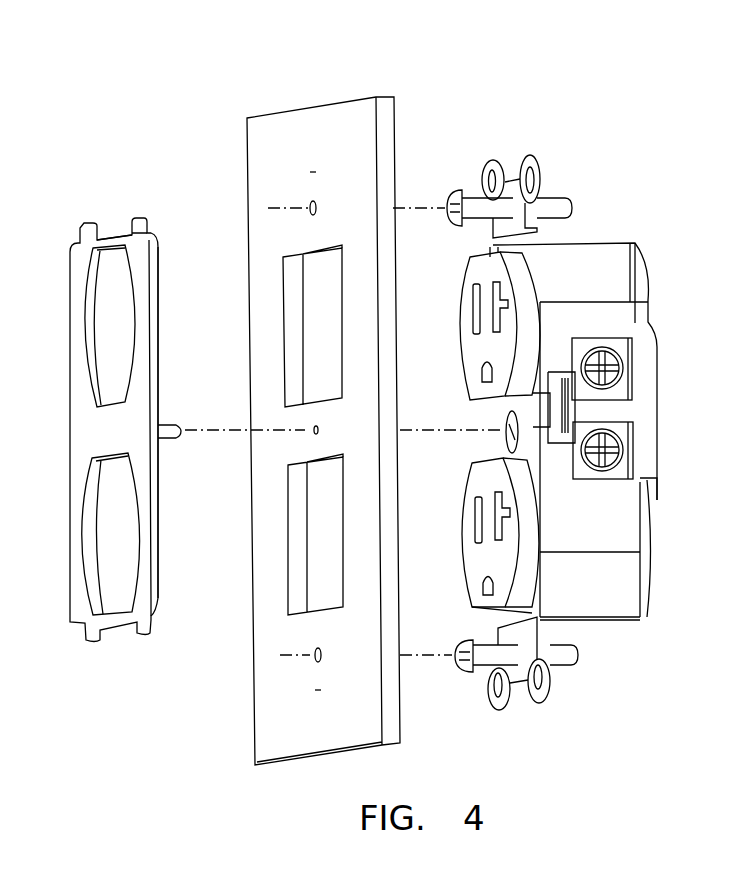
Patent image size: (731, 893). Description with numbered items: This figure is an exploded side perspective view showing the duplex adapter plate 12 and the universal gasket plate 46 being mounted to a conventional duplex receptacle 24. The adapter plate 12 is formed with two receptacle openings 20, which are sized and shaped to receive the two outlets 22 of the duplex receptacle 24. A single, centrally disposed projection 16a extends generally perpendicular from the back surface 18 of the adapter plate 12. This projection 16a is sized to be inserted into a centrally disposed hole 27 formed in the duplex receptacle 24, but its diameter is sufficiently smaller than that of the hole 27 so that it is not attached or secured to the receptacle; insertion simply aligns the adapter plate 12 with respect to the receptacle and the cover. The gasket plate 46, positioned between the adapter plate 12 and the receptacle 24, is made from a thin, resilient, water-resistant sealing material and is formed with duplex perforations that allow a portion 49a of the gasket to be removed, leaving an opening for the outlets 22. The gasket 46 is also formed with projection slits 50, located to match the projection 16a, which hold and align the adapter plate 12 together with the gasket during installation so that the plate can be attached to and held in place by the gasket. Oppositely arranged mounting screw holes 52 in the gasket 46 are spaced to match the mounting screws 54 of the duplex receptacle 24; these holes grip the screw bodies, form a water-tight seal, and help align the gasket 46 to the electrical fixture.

The adapter plate 12 is at (135, 408).
The projection 16a is at (170, 420).
The back surface 18 is at (165, 505).
The receptacle openings 20 is at (90, 364).
The outlets 22 is at (520, 283).
The duplex receptacle 24 is at (652, 362).
The hole 27 is at (505, 431).
The gasket plate 46 is at (350, 400).
The removable portion 49a is at (300, 257).
The projection slits 50 is at (317, 426).
The mounting screw holes 52 is at (311, 203).
The mounting screws 54 is at (455, 192).